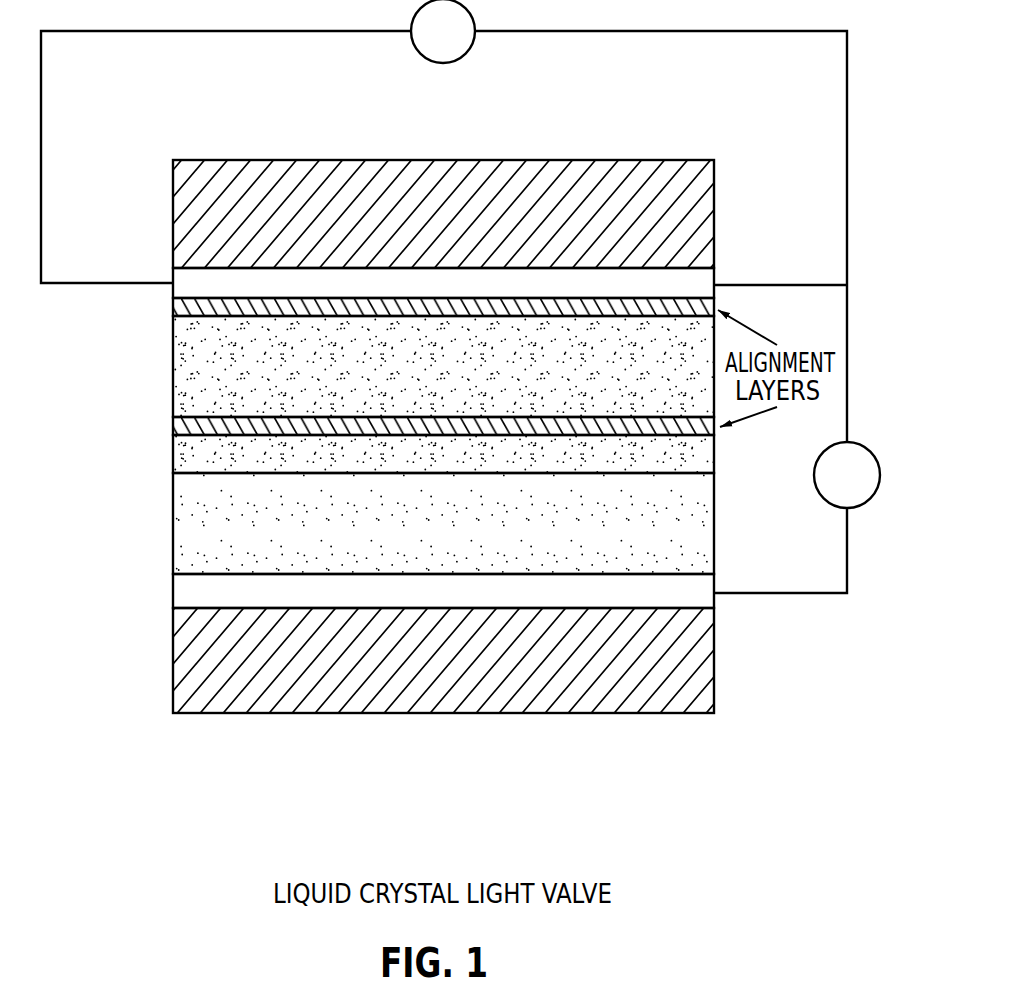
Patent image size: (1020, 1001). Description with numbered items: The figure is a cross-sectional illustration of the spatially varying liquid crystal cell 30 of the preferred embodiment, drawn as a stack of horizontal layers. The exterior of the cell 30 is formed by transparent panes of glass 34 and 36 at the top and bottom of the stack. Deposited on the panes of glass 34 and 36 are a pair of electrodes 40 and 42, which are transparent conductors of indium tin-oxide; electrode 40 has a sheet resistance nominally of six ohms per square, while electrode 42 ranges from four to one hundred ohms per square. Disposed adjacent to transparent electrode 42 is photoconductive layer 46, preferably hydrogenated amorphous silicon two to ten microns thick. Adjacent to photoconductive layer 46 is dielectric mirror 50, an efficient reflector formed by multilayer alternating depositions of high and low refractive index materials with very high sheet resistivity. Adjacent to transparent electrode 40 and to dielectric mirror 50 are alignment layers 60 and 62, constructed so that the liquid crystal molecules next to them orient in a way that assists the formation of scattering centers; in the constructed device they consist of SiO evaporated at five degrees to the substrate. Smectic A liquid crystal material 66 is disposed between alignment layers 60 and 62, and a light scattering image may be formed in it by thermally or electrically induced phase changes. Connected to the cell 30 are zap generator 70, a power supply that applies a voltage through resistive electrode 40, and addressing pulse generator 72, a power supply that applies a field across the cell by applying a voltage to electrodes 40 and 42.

The liquid crystal cell 30 is at (369, 467).
The pane of glass 34 is at (171, 216).
The pane of glass 36 is at (171, 652).
The electrode 40 is at (171, 290).
The electrode 42 is at (171, 585).
The photoconductive layer 46 is at (171, 518).
The dielectric mirror 50 is at (171, 455).
The alignment layer 60 is at (171, 309).
The alignment layer 62 is at (171, 426).
The liquid crystal material 66 is at (171, 358).
The zap generator 70 is at (470, 51).
The addressing pulse generator 72 is at (825, 507).